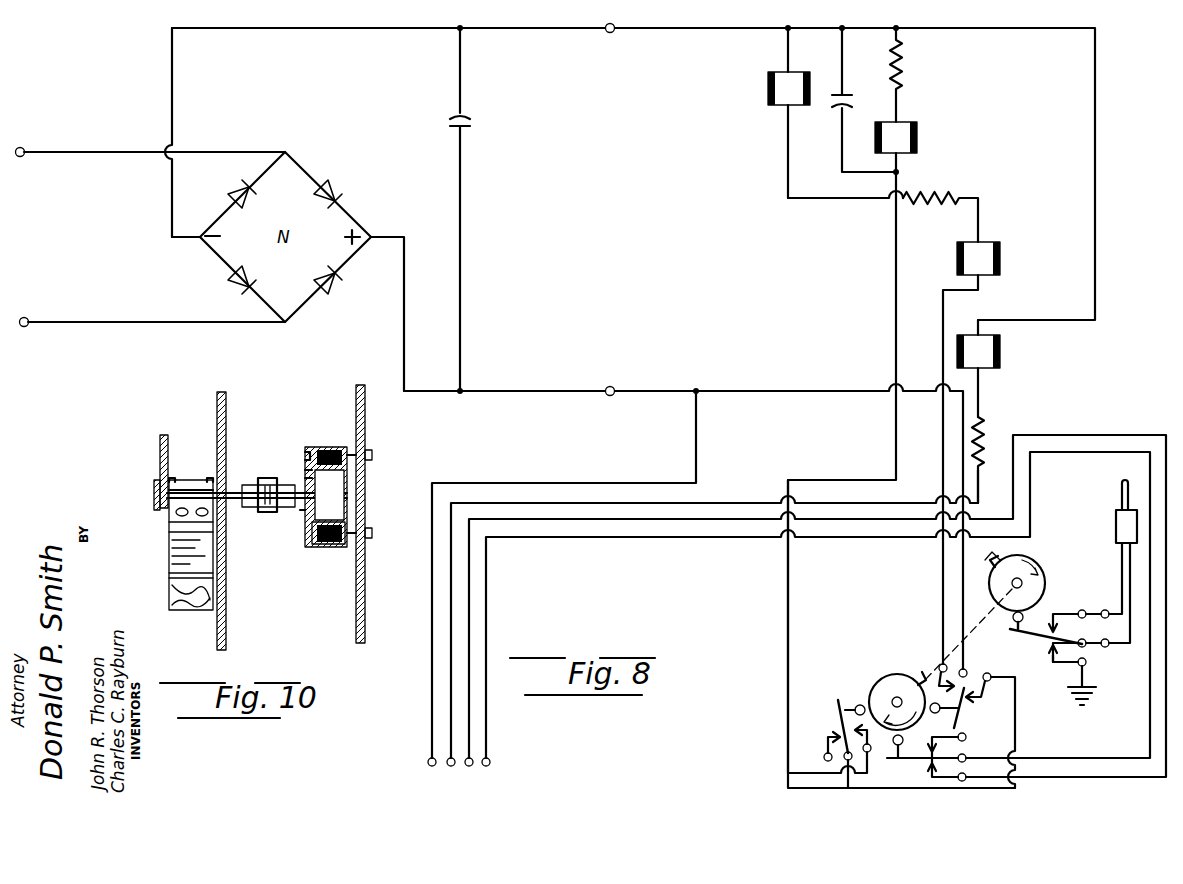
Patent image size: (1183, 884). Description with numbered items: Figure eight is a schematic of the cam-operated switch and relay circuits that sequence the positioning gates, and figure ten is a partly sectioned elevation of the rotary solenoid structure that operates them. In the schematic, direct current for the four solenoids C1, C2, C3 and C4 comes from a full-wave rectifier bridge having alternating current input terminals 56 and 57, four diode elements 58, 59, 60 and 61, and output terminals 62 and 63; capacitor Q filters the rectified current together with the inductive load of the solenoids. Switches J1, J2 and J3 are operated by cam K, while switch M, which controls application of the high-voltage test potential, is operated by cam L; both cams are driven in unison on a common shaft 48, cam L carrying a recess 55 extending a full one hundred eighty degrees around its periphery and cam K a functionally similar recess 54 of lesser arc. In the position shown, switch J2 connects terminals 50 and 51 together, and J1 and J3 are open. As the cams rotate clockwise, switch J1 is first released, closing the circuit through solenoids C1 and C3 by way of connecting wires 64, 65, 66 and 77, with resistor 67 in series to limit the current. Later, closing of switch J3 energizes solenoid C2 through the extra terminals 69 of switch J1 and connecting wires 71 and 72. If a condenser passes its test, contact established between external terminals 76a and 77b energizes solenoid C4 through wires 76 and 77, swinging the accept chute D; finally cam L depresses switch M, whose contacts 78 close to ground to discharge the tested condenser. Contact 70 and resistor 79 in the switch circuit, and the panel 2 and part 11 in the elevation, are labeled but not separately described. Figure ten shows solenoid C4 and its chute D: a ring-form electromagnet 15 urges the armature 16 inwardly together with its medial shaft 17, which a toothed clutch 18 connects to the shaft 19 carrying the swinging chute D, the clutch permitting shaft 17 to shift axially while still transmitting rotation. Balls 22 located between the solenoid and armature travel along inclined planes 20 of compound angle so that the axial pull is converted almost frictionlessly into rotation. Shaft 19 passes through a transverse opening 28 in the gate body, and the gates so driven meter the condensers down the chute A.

In FIG. 8, the alternating current input terminal 56 is at (26, 146).
In FIG. 8, the alternating current input terminal 57 is at (30, 316).
In FIG. 8, the diode element 58 is at (254, 203).
In FIG. 8, the diode element 59 is at (254, 277).
In FIG. 8, the diode element 60 is at (316, 275).
In FIG. 8, the diode element 61 is at (328, 212).
In FIG. 8, the output terminal 62 is at (180, 240).
In FIG. 8, the output terminal 63 is at (378, 241).
In FIG. 8, the connecting wire 64 is at (785, 391).
In FIG. 8, the connecting wire 65 is at (943, 316).
In FIG. 8, the connecting wire 66 is at (810, 200).
In FIG. 8, the resistor 67 is at (948, 192).
In FIG. 8, the extra terminals of switch J1 69 is at (987, 672).
In FIG. 8, the switch contact 70 is at (828, 740).
In FIG. 8, the connecting wire 71 is at (1016, 724).
In FIG. 8, the connecting wire 72 is at (790, 592).
In FIG. 8, the wire 76 is at (697, 440).
In FIG. 8, the terminal 76a is at (427, 762).
In FIG. 8, the connecting wire 77 is at (660, 29).
In FIG. 8, the terminal 77b is at (452, 767).
In FIG. 8, the contacts 78 is at (1052, 658).
In FIG. 8, the resistor 79 is at (987, 440).
In FIG. 8, the common shaft 48 is at (1020, 636).
In FIG. 8, the terminal 50 is at (469, 767).
In FIG. 8, the terminal 51 is at (490, 760).
In FIG. 8, the cam contact 54 is at (905, 690).
In FIG. 8, the recess 55 is at (990, 575).
In FIG. 8, the capacitor Q is at (474, 124).
In FIG. 8, the rotary solenoid C1 is at (789, 113).
In FIG. 8, the rotary solenoid C2 is at (852, 400).
In FIG. 8, the rotary solenoid C3 is at (978, 258).
In FIG. 8, the rotary solenoid C4 is at (978, 368).
In FIG. 10, the rotary solenoid C4 is at (320, 548).
In FIG. 8, the cam K is at (882, 677).
In FIG. 8, the cam L is at (1042, 562).
In FIG. 8, the switch M is at (1105, 609).
In FIG. 8, the switch J1 is at (968, 708).
In FIG. 8, the switch J2 is at (931, 770).
In FIG. 8, the switch J3 is at (836, 706).
In FIG. 10, the frame panel 2 is at (226, 636).
In FIG. 10, the chute A is at (160, 450).
In FIG. 10, the cylinder 11 is at (168, 543).
In FIG. 10, the transverse opening 28 is at (190, 488).
In FIG. 10, the swinging chute D is at (170, 606).
In FIG. 10, the shaft 19 is at (232, 500).
In FIG. 10, the toothed clutch 18 is at (264, 478).
In FIG. 10, the electromagnet 15 is at (330, 450).
In FIG. 10, the armature 16 is at (305, 455).
In FIG. 10, the balls 22 is at (303, 470).
In FIG. 10, the inclined planes 20 is at (303, 478).
In FIG. 10, the medial shaft 17 is at (300, 512).